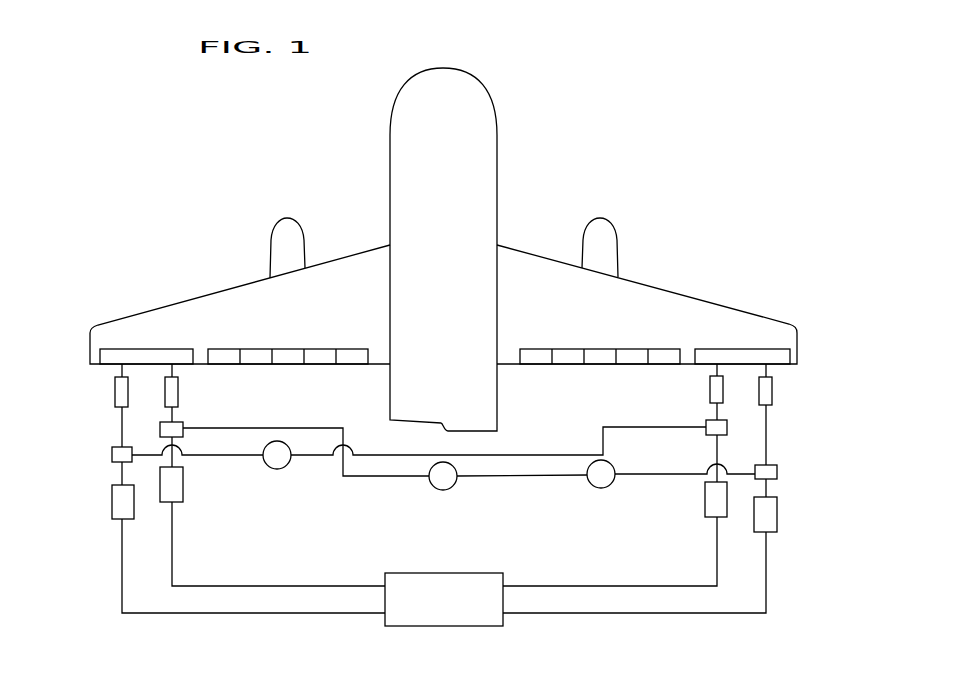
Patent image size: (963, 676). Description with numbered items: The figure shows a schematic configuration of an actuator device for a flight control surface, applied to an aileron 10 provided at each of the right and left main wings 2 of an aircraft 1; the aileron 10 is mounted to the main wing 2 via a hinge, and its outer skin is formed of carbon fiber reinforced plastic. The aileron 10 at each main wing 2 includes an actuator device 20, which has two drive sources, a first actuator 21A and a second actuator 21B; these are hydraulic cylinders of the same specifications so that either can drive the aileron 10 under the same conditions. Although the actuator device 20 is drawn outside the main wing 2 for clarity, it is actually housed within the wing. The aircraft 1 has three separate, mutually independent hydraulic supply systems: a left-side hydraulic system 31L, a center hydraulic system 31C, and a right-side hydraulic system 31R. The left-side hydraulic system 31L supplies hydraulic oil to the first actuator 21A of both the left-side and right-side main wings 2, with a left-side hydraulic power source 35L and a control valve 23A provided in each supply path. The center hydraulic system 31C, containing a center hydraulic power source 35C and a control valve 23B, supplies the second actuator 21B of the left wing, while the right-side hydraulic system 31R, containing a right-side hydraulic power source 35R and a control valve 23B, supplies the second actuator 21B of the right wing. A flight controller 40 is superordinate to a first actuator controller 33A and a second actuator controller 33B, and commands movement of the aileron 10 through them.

The aircraft 1 is at (587, 108).
The main wing 2 is at (248, 282).
The aileron 10 is at (140, 348).
The actuator device 20 is at (444, 436).
The first actuator 21A is at (115, 392).
The second actuator 21B is at (165, 393).
The control valve 23A is at (112, 455).
The control valve 23B is at (183, 430).
The left-side hydraulic system 31L is at (238, 456).
The center hydraulic system 31C is at (351, 477).
The right-side hydraulic system 31R is at (631, 478).
The first actuator controller 33A is at (112, 500).
The second actuator controller 33B is at (183, 492).
The left-side hydraulic power source 35L is at (280, 469).
The center hydraulic power source 35C is at (458, 476).
The right-side hydraulic power source 35R is at (587, 474).
The flight controller 40 is at (444, 599).